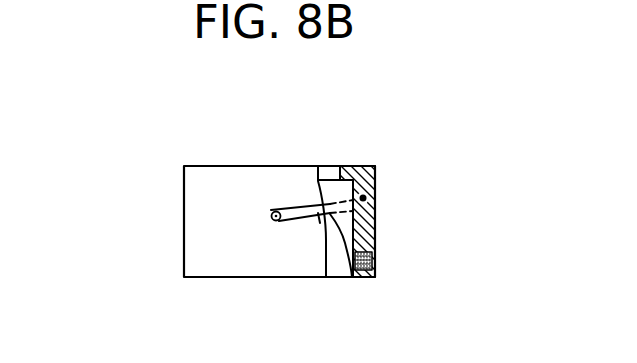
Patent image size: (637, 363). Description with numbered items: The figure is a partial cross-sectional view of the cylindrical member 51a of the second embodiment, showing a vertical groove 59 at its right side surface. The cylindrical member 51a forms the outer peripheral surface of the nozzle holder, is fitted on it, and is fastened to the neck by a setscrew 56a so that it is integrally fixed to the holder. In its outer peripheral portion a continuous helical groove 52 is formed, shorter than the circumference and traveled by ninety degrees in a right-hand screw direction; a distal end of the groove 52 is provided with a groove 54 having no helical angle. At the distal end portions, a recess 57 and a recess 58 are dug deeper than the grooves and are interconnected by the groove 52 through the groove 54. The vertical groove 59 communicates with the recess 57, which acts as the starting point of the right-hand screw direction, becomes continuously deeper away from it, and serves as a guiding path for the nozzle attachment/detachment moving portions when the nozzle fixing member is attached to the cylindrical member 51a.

The cylindrical member 51a is at (167, 178).
The groove 52 is at (326, 277).
The groove 54 is at (287, 219).
The setscrew 56a is at (372, 260).
The recess 57 is at (367, 198).
The recess 58 is at (271, 209).
The vertical groove 59 is at (375, 168).